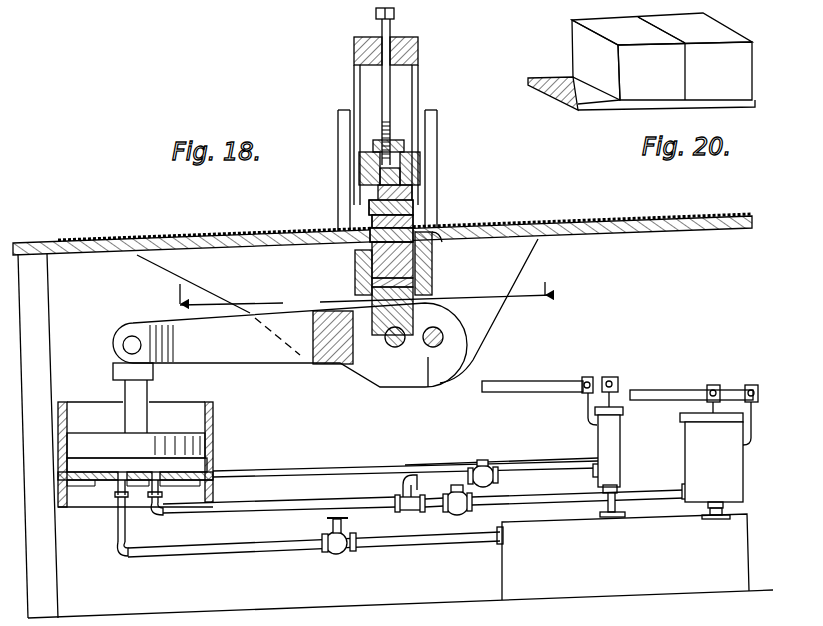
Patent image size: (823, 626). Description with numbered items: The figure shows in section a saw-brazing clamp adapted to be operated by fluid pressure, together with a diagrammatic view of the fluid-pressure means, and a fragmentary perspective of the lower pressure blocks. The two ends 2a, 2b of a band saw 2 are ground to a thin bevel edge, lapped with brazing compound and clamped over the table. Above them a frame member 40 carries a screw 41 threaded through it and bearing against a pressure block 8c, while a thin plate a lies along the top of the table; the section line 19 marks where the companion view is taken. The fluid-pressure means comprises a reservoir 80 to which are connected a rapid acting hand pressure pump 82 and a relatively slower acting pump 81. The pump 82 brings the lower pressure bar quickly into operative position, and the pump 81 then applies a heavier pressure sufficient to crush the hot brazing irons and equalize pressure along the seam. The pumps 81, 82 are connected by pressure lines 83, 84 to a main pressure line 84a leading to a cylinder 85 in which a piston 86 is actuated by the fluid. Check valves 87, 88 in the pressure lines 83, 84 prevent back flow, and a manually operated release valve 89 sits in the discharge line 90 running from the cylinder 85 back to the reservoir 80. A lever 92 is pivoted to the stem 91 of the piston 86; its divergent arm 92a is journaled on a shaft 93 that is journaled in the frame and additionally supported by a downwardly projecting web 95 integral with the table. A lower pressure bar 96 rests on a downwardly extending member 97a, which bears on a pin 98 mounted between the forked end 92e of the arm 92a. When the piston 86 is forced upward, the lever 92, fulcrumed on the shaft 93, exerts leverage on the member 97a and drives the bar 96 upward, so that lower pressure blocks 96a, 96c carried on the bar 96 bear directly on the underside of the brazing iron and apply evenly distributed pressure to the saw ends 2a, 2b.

In FIG. 18, the band saw 2 is at (224, 238).
In FIG. 18, the top plate a is at (281, 252).
In FIG. 18, the frame member 40 is at (412, 50).
In FIG. 18, the screw 41 is at (388, 91).
In FIG. 18, the pressure block 8c is at (418, 168).
In FIG. 18, the end of band saw 2a is at (378, 226).
In FIG. 18, the end of band saw 2b is at (413, 228).
In FIG. 18, the lower pressure block 96a is at (380, 260).
In FIG. 20, the lower pressure block 96a is at (710, 33).
In FIG. 18, the lower pressure bar 96 is at (380, 283).
In FIG. 20, the lower pressure bar 96 is at (553, 80).
In FIG. 18, the supporting member 97a is at (418, 300).
In FIG. 18, the section line 19 is at (361, 284).
In FIG. 18, the lever 92 is at (157, 365).
In FIG. 18, the divergent arm 92a is at (284, 365).
In FIG. 18, the forked end 92e is at (428, 370).
In FIG. 18, the pin 98 is at (392, 348).
In FIG. 18, the shaft 93 is at (444, 335).
In FIG. 18, the downwardly projecting web 95 is at (505, 305).
In FIG. 18, the stem 91 is at (133, 388).
In FIG. 18, the piston 86 is at (200, 443).
In FIG. 18, the cylinder 85 is at (212, 463).
In FIG. 18, the discharge line 90 is at (232, 549).
In FIG. 18, the release valve 89 is at (343, 553).
In FIG. 18, the main pressure line 84a is at (274, 507).
In FIG. 18, the pressure line 83 is at (443, 477).
In FIG. 18, the check valve 87 is at (483, 462).
In FIG. 18, the check valve 88 is at (455, 516).
In FIG. 18, the pressure line 84 is at (507, 503).
In FIG. 18, the pump 81 is at (613, 444).
In FIG. 18, the hand pressure pump 82 is at (690, 440).
In FIG. 18, the reservoir 80 is at (733, 551).
In FIG. 20, the lower pressure block 96c is at (583, 37).